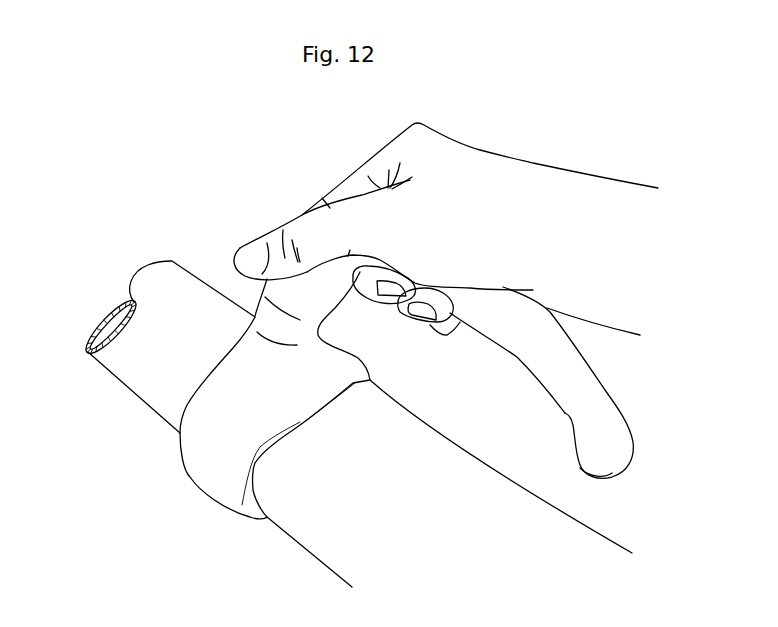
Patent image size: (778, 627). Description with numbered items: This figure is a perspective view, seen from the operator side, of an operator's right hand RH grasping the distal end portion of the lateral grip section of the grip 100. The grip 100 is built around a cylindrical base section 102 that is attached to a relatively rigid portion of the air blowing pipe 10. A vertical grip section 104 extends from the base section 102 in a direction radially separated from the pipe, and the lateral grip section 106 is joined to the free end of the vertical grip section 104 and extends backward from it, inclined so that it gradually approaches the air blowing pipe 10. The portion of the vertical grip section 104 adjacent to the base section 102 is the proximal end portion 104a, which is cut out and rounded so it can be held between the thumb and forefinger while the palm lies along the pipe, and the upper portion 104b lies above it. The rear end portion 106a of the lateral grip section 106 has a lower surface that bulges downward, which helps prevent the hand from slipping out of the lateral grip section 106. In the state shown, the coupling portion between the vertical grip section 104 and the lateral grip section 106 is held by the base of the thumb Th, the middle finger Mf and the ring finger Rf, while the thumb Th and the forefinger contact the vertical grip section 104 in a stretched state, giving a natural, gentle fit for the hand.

The air blowing pipe 10 is at (148, 281).
The grip 100 is at (486, 357).
The cylindrical base section 102 is at (204, 492).
The vertical grip section 104 is at (263, 282).
The proximal end portion 104a is at (300, 333).
The upper portion 104b is at (326, 300).
The lateral grip section 106 is at (597, 374).
The rear end portion 106a is at (606, 462).
The thumb Th is at (272, 244).
The middle finger Mf is at (390, 272).
The ring finger Rf is at (441, 287).
The right hand RH is at (536, 165).